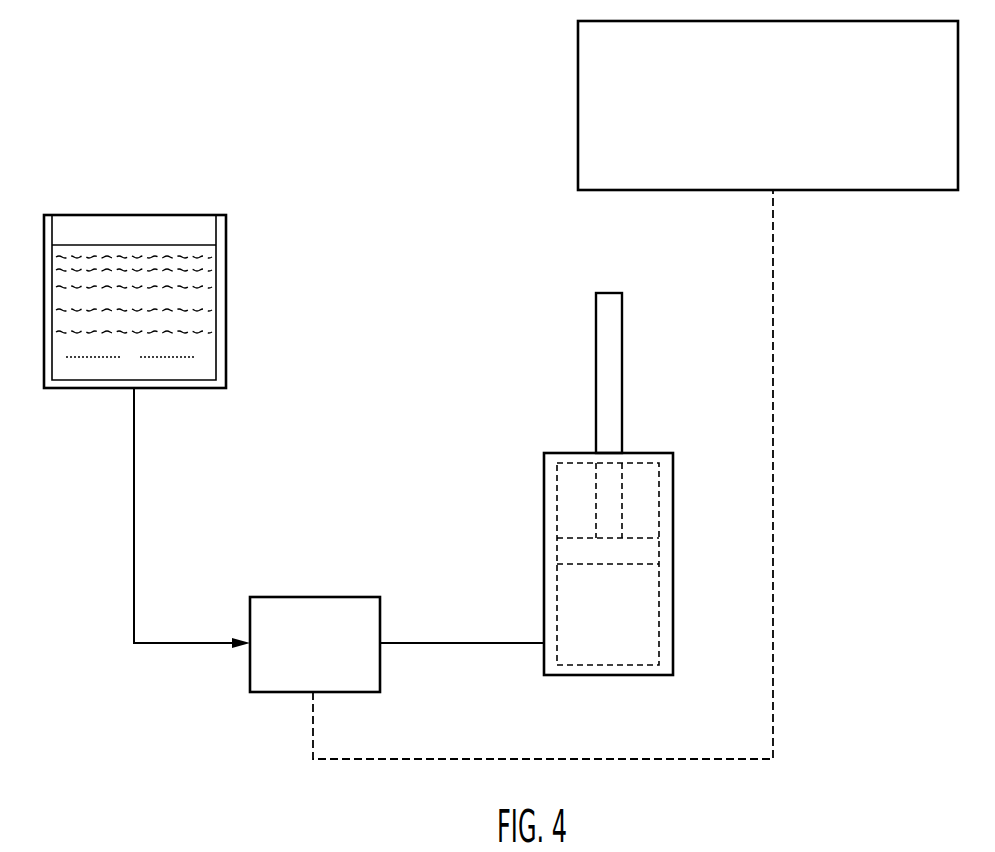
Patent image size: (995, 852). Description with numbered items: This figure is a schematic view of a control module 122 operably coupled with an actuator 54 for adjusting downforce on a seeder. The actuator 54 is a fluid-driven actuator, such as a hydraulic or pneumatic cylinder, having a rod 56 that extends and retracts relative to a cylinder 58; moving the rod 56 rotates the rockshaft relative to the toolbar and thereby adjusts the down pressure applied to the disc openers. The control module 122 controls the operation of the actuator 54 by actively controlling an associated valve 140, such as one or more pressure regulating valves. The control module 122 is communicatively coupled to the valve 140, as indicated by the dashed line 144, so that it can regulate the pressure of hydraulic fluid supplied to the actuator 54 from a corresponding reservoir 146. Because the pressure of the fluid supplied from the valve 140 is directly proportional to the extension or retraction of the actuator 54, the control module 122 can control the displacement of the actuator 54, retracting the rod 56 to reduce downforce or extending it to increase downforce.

The actuator 54 is at (604, 484).
The rod 56 is at (596, 338).
The cylinder 58 is at (544, 537).
The control module 122 is at (785, 119).
The valve 140 is at (334, 658).
The dashed line 144 is at (774, 512).
The reservoir 146 is at (226, 275).